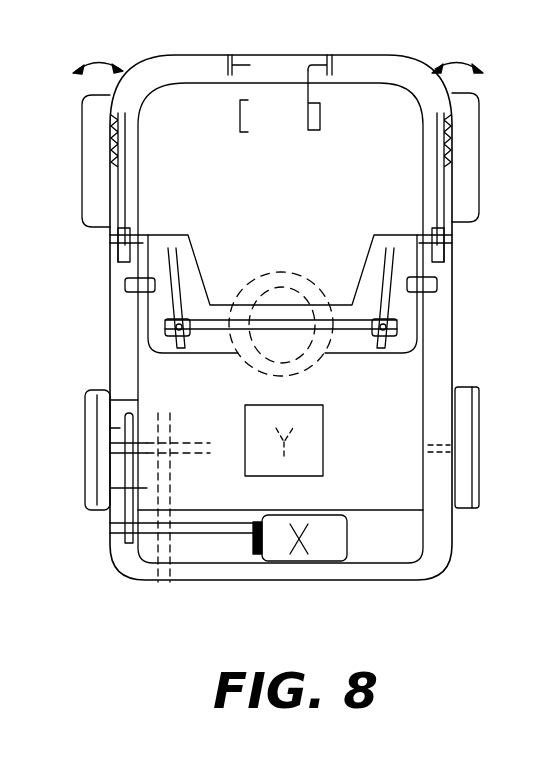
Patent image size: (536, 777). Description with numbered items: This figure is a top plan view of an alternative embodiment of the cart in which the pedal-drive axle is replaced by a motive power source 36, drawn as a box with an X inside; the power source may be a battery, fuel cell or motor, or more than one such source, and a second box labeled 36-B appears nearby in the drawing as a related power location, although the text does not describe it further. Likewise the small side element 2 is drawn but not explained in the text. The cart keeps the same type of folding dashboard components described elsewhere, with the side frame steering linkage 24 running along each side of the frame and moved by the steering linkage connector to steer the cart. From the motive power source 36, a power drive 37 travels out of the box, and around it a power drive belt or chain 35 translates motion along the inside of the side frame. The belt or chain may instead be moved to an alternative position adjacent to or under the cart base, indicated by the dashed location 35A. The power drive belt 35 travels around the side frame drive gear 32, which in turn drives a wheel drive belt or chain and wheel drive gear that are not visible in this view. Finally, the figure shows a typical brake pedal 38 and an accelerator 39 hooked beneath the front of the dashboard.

The side pad / housing element 2 is at (466, 388).
The side frame steering linkage 24 is at (110, 210).
The side frame drive gear 32 is at (118, 462).
The power drive belt or chain 35 is at (113, 548).
The alternative position of power drive belt or chain 35A is at (171, 583).
The motive power source 36 is at (320, 513).
The connector block Y 36-B is at (305, 442).
The power drive 37 is at (225, 535).
The brake pedal 38 is at (240, 100).
The accelerator 39 is at (322, 103).